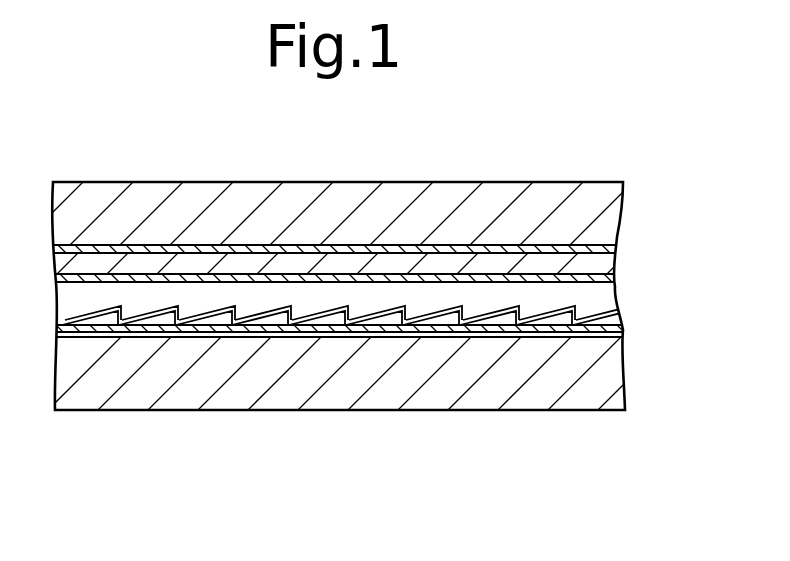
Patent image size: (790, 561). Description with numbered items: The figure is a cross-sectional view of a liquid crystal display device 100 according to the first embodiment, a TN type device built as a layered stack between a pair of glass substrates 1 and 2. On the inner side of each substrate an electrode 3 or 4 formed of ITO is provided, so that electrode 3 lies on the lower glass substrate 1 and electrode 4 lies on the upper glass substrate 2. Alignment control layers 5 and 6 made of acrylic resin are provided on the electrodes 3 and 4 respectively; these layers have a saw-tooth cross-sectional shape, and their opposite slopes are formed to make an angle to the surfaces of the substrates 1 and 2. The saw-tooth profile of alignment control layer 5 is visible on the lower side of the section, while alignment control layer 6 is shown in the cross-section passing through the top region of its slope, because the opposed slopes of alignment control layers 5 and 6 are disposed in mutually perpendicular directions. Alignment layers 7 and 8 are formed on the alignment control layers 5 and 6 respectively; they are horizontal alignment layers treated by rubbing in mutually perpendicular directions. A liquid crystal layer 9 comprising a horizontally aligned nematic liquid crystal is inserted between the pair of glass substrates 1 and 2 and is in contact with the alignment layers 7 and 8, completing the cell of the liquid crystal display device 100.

The liquid crystal display device 100 is at (412, 172).
The glass substrate 1 is at (609, 371).
The glass substrate 2 is at (612, 198).
The electrode 3 is at (581, 333).
The electrode 4 is at (616, 245).
The alignment control layer 5 is at (548, 320).
The alignment control layer 6 is at (613, 266).
The alignment layer 7 is at (533, 322).
The alignment layer 8 is at (617, 279).
The liquid crystal layer 9 is at (604, 302).